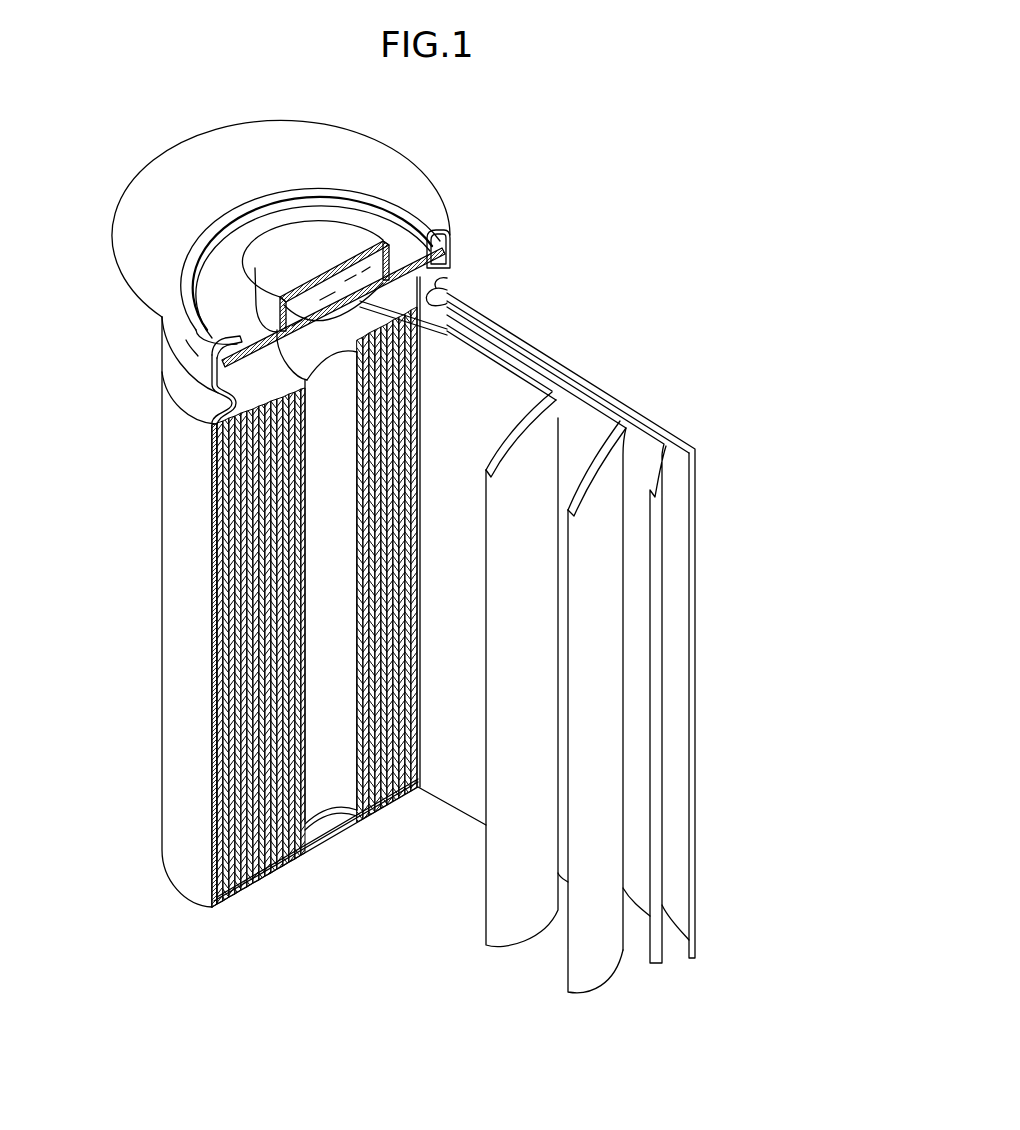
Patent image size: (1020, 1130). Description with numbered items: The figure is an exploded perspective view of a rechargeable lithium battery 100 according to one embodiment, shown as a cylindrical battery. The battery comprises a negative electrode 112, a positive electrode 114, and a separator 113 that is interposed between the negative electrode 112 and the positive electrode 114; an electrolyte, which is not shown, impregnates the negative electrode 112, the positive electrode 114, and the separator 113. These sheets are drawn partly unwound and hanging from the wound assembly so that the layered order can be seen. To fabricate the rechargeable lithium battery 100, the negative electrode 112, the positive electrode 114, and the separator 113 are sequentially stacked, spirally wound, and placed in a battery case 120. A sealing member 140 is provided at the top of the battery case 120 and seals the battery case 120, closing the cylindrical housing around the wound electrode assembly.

The rechargeable lithium battery 100 is at (508, 205).
The negative electrode 112 is at (682, 453).
The separator 113 is at (518, 377).
The positive electrode 114 is at (585, 420).
The battery case 120 is at (178, 563).
The sealing member 140 is at (288, 253).